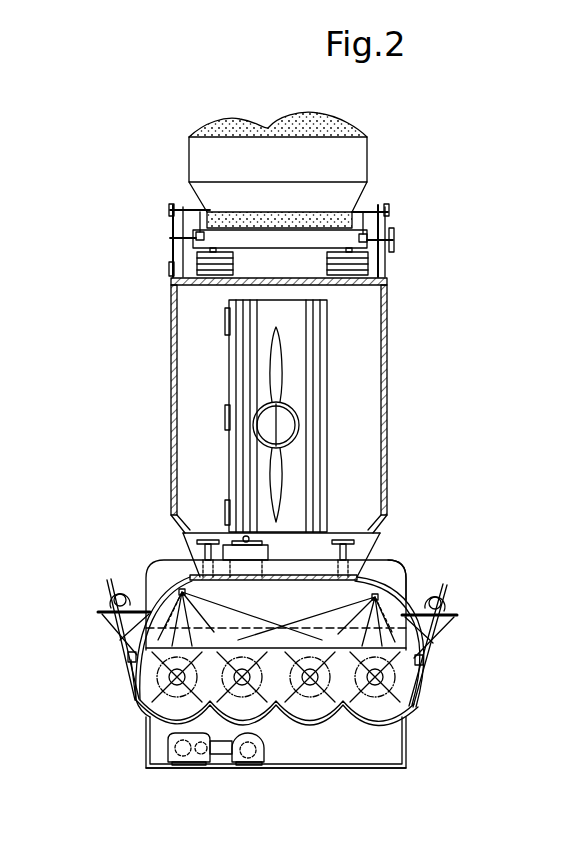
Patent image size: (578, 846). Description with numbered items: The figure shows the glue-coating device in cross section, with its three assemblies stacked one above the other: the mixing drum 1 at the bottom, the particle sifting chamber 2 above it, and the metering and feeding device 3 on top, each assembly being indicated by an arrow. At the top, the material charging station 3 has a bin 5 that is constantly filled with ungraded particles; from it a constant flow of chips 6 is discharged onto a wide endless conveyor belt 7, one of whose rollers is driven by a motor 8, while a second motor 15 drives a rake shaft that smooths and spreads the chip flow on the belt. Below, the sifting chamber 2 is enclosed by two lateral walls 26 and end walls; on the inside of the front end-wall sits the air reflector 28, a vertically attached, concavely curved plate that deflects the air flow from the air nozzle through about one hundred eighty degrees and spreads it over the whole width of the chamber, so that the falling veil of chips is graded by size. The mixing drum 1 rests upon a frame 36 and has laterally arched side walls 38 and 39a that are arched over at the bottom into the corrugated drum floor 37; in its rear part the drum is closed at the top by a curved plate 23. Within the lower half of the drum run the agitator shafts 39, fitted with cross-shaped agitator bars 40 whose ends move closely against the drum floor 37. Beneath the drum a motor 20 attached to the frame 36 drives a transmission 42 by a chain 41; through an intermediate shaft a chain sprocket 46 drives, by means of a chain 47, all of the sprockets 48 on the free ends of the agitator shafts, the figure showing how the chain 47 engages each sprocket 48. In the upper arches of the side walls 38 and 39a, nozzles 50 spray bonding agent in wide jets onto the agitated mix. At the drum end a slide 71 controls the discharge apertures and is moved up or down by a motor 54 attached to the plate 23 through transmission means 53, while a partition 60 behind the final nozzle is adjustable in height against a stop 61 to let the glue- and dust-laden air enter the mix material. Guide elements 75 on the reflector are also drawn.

The mixing drum 1 is at (425, 710).
The particle sifting chamber 2 is at (255, 433).
The metering and feeding device 3 is at (410, 218).
The bin 5 is at (360, 160).
The flow of chips 6 is at (228, 215).
The conveyor belt 7 is at (200, 238).
The motor 8 is at (370, 290).
The second motor 15 is at (175, 283).
The motor 20 is at (262, 765).
The curved plate 23 is at (127, 632).
The lateral walls 26 is at (387, 466).
The air reflector 28 is at (312, 357).
The frame 36 is at (328, 768).
The drum floor 37 is at (353, 726).
The side wall 38 is at (428, 582).
The agitator shafts 39 is at (310, 700).
The side wall 39a is at (160, 603).
The agitator bars 40 is at (395, 657).
The chain 41 is at (228, 764).
The transmission 42 is at (188, 765).
The chain sprocket 46 is at (134, 680).
The chain 47 is at (206, 624).
The sprockets 48 is at (148, 725).
The nozzles 50 is at (160, 600).
The transmission means 53 is at (108, 593).
The motor 54 is at (104, 585).
The partition 60 is at (150, 575).
The stop 61 is at (196, 540).
The slide 71 is at (130, 660).
The guide tab 75 is at (227, 325).